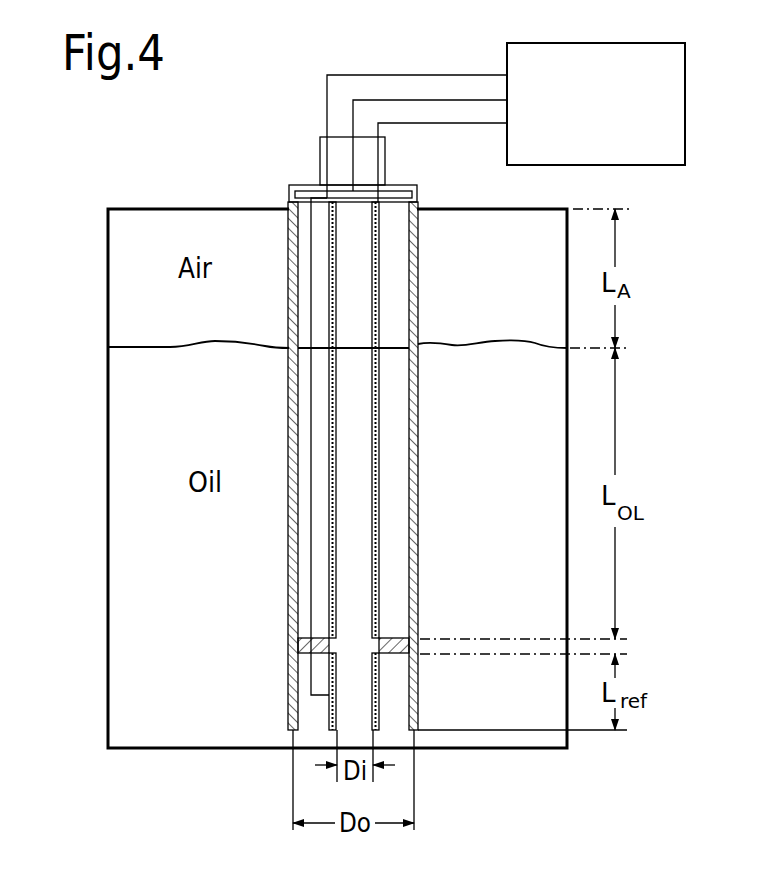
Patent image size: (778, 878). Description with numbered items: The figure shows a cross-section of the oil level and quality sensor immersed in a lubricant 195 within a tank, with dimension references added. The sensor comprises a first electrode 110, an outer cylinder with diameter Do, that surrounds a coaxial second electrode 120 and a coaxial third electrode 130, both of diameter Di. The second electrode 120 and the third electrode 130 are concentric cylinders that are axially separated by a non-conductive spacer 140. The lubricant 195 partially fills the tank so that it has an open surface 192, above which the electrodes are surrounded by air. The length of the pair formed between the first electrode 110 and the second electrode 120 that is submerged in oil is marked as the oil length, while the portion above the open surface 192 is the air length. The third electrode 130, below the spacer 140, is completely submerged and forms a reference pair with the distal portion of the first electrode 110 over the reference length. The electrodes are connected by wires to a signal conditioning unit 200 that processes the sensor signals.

The first electrode 110 is at (415, 440).
The second electrode 120 is at (378, 553).
The third electrode 130 is at (378, 715).
The spacer 140 is at (390, 638).
The open surface 192 is at (150, 347).
The lubricant 195 is at (127, 713).
The signal conditioning unit 200 is at (537, 52).